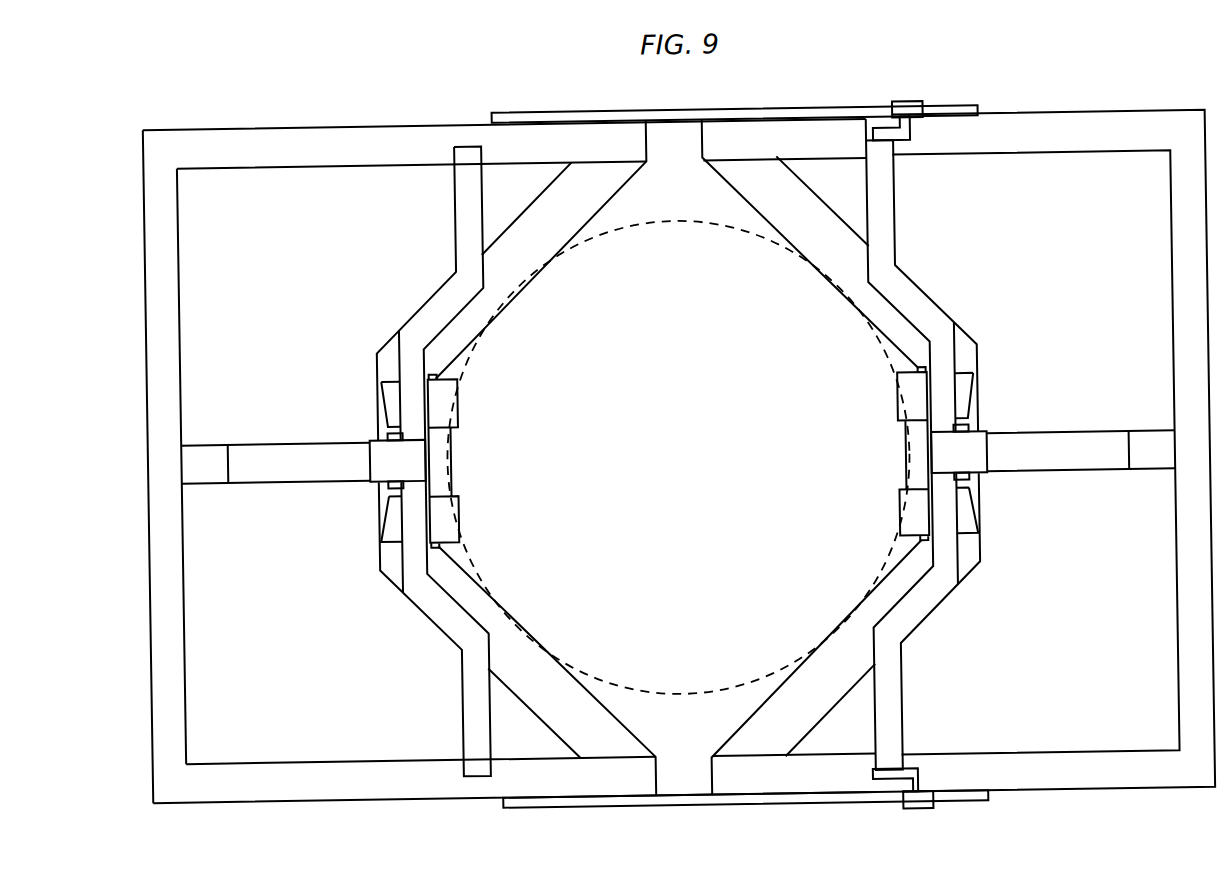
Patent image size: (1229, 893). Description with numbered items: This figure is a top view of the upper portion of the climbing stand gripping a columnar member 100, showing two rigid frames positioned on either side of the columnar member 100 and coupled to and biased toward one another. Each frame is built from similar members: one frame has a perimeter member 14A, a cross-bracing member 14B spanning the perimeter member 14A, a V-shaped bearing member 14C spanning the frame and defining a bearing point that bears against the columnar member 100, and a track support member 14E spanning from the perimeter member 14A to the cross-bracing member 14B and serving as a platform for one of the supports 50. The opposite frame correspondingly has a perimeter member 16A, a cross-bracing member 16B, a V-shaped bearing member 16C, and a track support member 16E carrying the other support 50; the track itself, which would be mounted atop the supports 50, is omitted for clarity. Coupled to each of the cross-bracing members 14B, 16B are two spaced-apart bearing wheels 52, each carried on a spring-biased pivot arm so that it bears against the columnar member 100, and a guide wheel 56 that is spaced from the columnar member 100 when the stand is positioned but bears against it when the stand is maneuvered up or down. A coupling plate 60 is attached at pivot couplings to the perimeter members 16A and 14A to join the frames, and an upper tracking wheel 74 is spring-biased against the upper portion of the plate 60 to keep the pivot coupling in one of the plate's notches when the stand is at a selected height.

The perimeter member 16A is at (344, 122).
The perimeter member 14A is at (1005, 118).
The coupling plate 60 is at (680, 110).
The upper tracking wheel 74 is at (915, 105).
The cross-bracing member 16B is at (459, 217).
The cross-bracing member 14B is at (897, 690).
The V-shaped bearing member 16C is at (626, 187).
The V-shaped bearing member 14C is at (729, 182).
The track support member 16E is at (287, 476).
The track support member 14E is at (1070, 476).
The support 50 is at (207, 450).
The guide wheel 56 is at (382, 460).
The bearing wheel 52 is at (443, 397).
The columnar member 100 is at (781, 245).